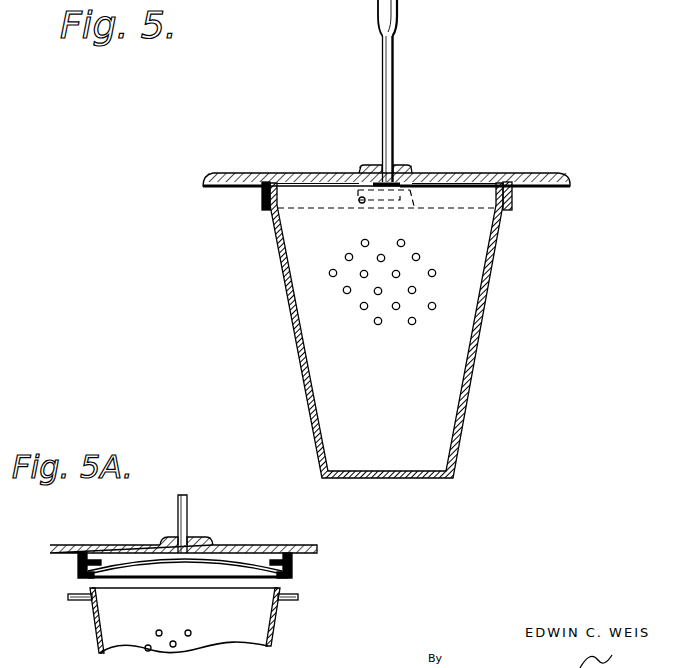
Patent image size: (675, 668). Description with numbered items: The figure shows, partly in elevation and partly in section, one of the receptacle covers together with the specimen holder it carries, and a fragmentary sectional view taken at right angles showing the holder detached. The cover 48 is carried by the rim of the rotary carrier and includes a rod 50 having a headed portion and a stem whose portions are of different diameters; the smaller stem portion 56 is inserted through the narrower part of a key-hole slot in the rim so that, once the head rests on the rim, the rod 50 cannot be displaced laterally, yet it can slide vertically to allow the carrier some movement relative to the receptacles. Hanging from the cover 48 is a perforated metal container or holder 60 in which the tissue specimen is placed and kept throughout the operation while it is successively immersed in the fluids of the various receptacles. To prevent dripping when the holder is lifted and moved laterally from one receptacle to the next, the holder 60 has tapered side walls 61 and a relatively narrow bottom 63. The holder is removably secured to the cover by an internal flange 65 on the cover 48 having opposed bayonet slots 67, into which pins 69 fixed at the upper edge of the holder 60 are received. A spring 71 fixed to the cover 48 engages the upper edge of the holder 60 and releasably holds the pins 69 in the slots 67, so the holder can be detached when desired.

In FIG. 5, the cover 48 is at (332, 165).
In FIG. 5, the rod 50 is at (405, 24).
In FIG. 5, the stem portion 56 is at (395, 97).
In FIG. 5A, the stem portion 56 is at (188, 507).
In FIG. 5, the perforated metal container or holder 60 is at (412, 351).
In FIG. 5A, the perforated metal container or holder 60 is at (284, 631).
In FIG. 5, the tapered side walls 61 is at (462, 357).
In FIG. 5, the bottom 63 is at (383, 485).
In FIG. 5, the internal flange 65 is at (512, 201).
In FIG. 5, the bayonet slots 67 is at (441, 168).
In FIG. 5A, the bayonet slots 67 is at (291, 568).
In FIG. 5A, the pins 69 is at (299, 597).
In FIG. 5A, the spring 71 is at (248, 562).